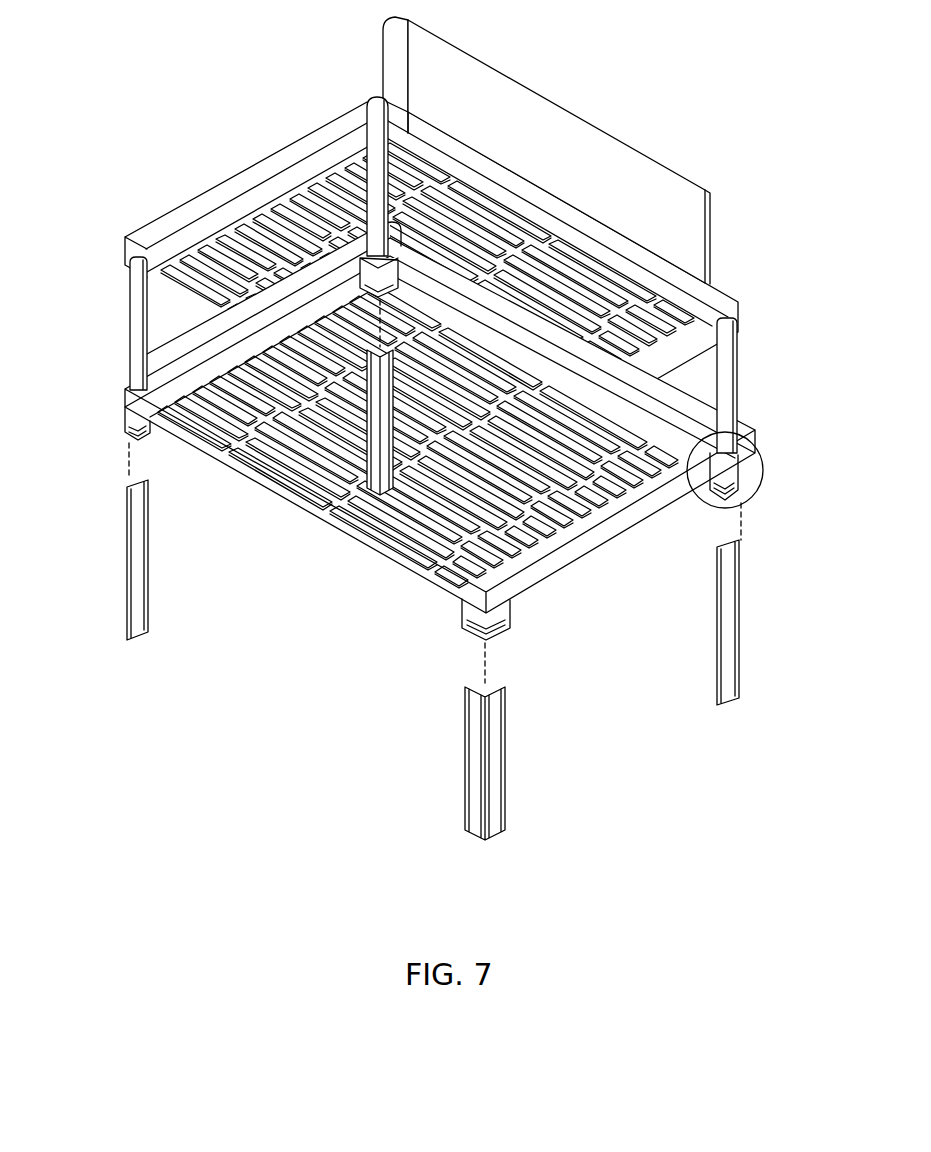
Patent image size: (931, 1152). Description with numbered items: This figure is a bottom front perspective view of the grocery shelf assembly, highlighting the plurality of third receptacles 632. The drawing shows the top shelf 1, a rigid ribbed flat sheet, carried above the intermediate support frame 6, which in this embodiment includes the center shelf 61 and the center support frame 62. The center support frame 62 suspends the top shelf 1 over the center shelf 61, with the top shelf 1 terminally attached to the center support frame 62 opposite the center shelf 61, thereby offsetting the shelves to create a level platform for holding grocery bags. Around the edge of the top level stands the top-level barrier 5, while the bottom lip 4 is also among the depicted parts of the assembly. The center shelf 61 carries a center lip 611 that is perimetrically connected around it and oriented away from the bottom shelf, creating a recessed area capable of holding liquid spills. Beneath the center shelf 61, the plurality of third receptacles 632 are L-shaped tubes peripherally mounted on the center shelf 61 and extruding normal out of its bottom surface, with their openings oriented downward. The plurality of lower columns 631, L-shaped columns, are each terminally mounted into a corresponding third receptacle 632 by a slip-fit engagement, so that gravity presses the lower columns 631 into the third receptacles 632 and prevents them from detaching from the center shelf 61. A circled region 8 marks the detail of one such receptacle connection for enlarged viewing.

The top shelf 1 is at (247, 224).
The bottom lip 4 is at (431, 274).
The top-level barrier 5 is at (573, 156).
The intermediate support frame 6 is at (441, 468).
The center shelf 61 is at (474, 416).
The center lip 611 is at (760, 430).
The center support frame 62 is at (126, 327).
The lower columns 631 is at (128, 562).
The third receptacles 632 is at (156, 440).
The enlarged detail region 8 is at (755, 484).